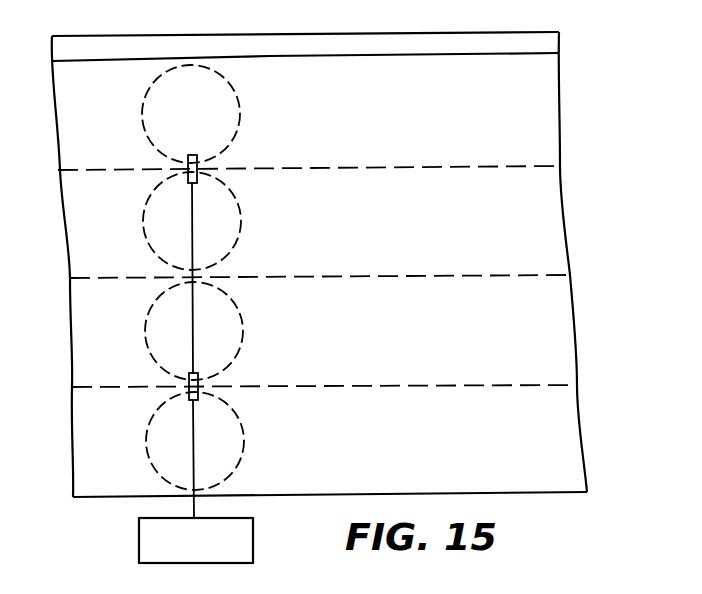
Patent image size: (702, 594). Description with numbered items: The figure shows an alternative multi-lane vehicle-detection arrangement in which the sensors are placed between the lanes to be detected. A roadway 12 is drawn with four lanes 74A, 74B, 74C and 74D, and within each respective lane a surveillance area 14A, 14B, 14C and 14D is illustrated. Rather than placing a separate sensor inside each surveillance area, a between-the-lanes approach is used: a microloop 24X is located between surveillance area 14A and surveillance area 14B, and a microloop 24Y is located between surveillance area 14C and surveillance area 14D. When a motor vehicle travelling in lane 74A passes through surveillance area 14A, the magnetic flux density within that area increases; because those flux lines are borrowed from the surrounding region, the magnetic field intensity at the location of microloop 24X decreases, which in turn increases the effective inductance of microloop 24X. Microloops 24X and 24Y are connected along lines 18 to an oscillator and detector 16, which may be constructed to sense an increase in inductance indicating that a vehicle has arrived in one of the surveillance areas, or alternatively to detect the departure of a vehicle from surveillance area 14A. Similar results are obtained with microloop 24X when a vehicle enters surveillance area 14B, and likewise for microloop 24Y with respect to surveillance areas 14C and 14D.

The roadway 12 is at (571, 232).
The surveillance area 14A is at (233, 93).
The surveillance area 14B is at (236, 208).
The surveillance area 14C is at (237, 312).
The surveillance area 14D is at (242, 430).
The oscillator and detector 16 is at (139, 541).
The lines 18 is at (194, 468).
The microloop 24X is at (198, 165).
The microloop 24Y is at (199, 386).
The lane 74A is at (490, 126).
The lane 74B is at (498, 225).
The lane 74C is at (492, 343).
The lane 74D is at (506, 439).